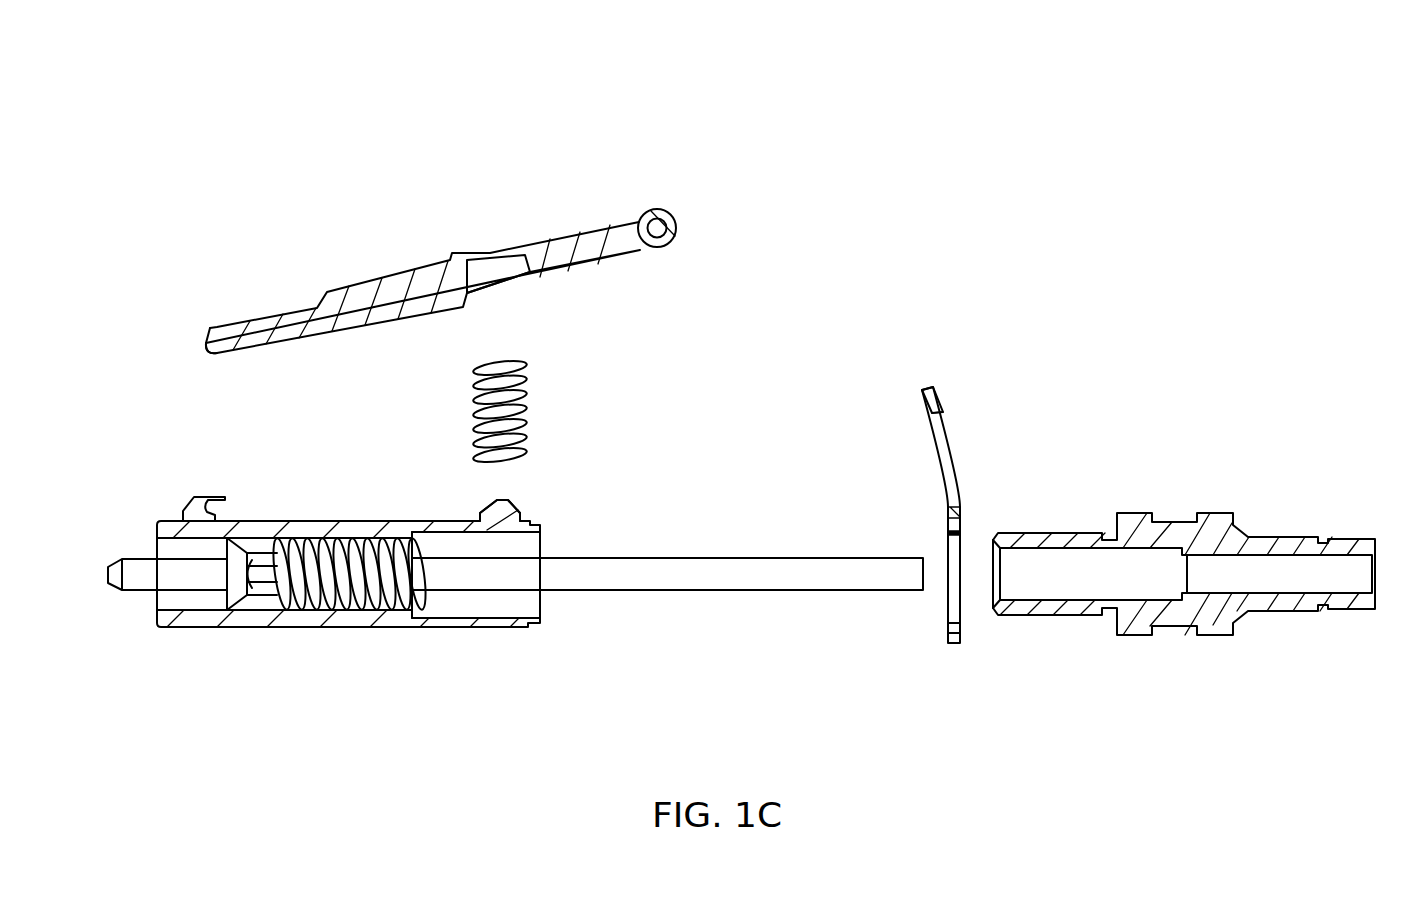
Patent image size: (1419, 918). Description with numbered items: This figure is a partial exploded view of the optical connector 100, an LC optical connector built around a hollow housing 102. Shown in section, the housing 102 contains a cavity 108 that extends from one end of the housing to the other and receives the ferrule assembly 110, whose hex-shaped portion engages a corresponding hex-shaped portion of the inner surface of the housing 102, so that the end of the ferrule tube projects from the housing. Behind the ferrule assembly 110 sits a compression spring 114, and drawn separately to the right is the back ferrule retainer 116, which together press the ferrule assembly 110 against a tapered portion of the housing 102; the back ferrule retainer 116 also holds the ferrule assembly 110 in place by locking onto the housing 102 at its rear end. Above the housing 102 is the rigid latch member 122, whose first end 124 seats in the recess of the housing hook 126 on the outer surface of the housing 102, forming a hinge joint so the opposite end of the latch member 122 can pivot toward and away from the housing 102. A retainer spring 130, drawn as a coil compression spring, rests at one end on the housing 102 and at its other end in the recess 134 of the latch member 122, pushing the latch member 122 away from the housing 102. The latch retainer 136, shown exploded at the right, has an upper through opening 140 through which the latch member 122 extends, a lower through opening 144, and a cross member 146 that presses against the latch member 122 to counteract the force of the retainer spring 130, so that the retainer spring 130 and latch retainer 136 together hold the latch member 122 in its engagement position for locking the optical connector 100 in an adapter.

The optical connector 100 is at (937, 124).
The housing 102 is at (340, 628).
The cavity 108 is at (518, 543).
The ferrule assembly 110 is at (133, 556).
The compression spring 114 is at (336, 540).
The back ferrule retainer 116 is at (1060, 533).
The latch member 122 is at (357, 284).
The first end of the latch member 124 is at (203, 343).
The housing hook 126 is at (190, 502).
The retainer spring 130 is at (528, 396).
The recess of the latch member 134 is at (503, 497).
The latch retainer 136 is at (945, 484).
The upper through opening 140 is at (945, 437).
The lower through opening 144 is at (945, 600).
The cross member 146 is at (922, 402).